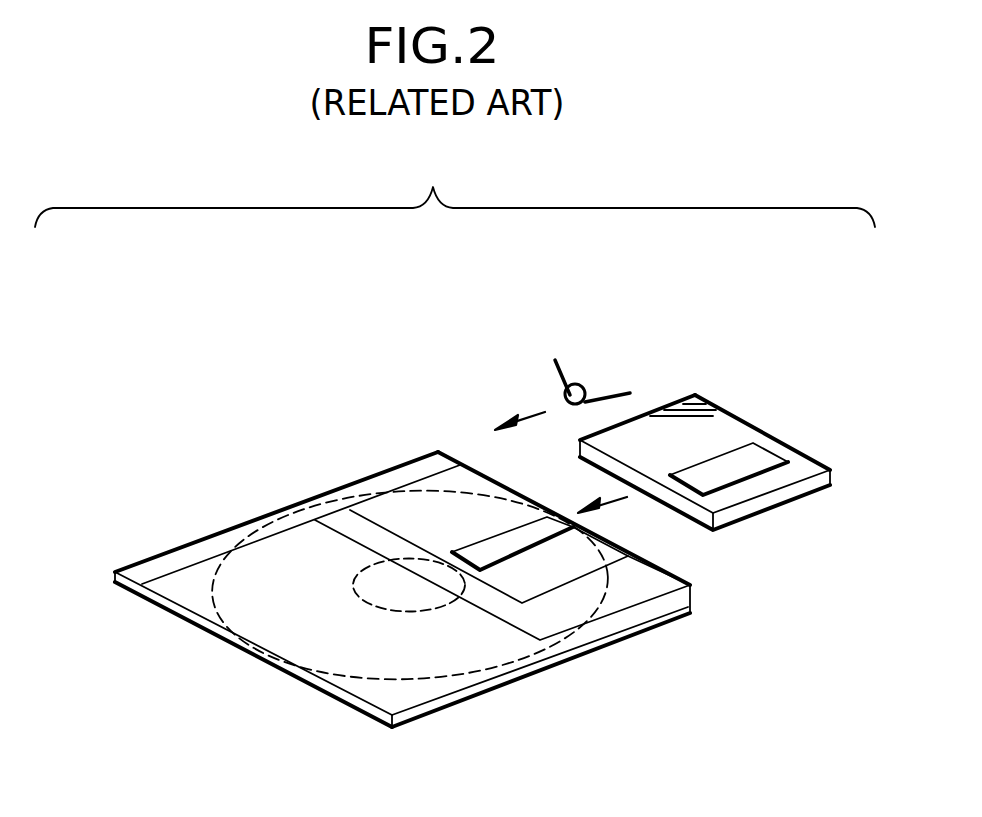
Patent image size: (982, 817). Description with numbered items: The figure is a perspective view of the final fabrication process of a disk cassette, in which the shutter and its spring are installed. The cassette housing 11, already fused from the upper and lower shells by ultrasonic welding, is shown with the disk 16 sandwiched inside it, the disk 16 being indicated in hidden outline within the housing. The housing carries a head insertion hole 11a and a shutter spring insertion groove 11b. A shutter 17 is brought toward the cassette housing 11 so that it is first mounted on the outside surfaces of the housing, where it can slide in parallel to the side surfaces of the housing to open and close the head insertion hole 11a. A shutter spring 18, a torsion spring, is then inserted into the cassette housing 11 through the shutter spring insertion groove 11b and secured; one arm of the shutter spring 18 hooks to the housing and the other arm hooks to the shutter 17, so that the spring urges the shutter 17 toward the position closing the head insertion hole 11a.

The cassette housing 11 is at (152, 597).
The head insertion hole 11a is at (493, 548).
The shutter spring insertion groove 11b is at (441, 447).
The disk 16 is at (268, 642).
The shutter 17 is at (733, 416).
The shutter spring 18 is at (562, 365).